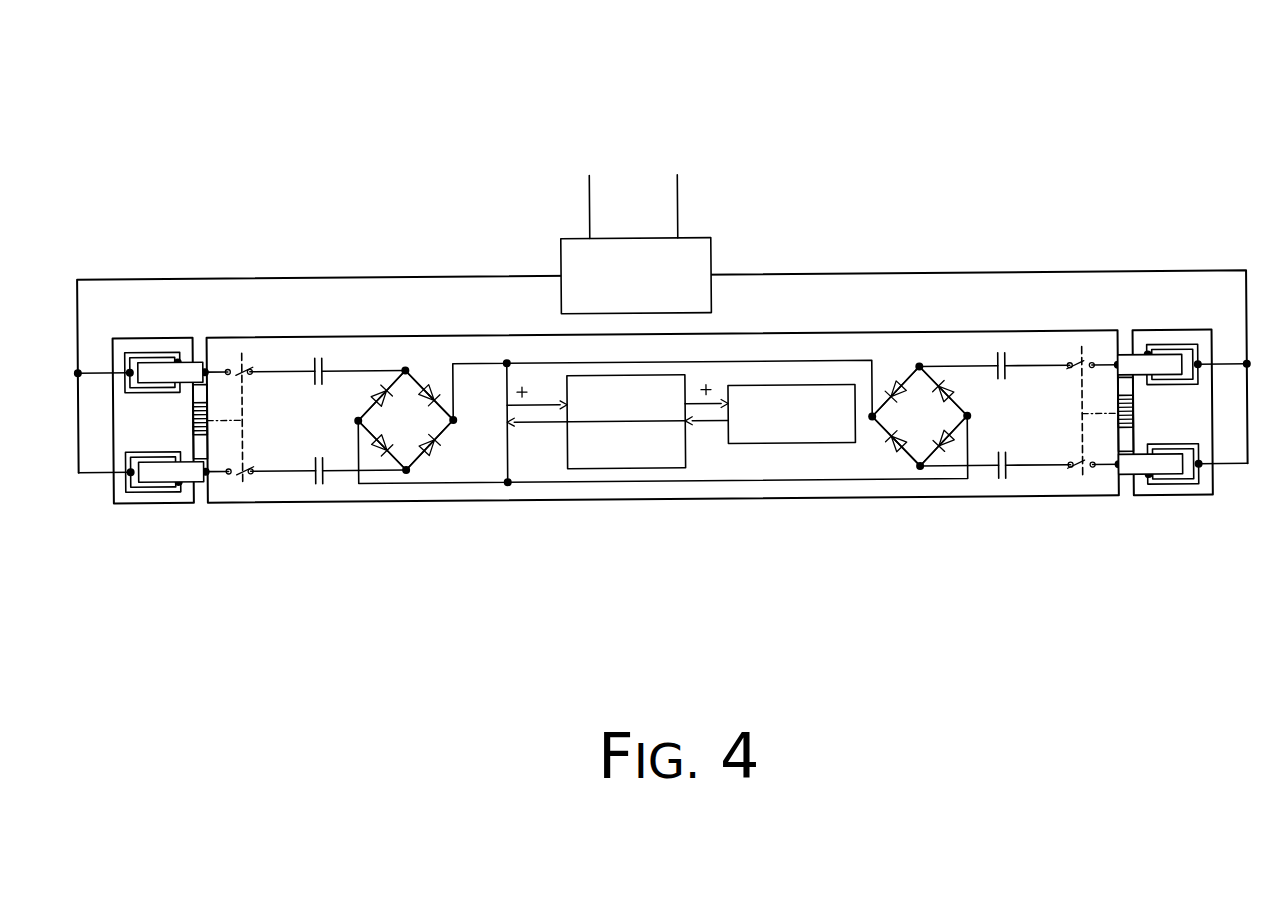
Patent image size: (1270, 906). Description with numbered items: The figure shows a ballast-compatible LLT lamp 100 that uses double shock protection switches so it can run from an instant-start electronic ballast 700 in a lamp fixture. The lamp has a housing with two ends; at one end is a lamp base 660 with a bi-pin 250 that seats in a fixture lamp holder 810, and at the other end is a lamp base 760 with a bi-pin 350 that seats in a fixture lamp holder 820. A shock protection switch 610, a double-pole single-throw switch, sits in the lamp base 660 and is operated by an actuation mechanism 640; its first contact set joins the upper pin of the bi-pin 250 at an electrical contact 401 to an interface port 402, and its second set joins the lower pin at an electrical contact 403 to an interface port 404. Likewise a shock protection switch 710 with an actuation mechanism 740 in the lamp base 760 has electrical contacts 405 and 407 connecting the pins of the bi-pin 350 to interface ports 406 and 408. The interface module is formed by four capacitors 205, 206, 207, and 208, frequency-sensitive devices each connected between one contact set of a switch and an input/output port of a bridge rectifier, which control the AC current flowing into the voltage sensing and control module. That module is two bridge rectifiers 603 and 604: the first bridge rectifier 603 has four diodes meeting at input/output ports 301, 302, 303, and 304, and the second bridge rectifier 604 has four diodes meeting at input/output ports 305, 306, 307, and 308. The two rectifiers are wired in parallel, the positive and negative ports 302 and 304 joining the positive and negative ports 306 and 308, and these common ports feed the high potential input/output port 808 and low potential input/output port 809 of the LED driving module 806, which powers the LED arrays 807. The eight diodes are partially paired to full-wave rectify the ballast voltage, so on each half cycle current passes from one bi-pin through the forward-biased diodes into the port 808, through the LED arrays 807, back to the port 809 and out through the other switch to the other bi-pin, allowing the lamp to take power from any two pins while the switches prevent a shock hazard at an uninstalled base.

The ballast-compatible LLT lamp 100 is at (767, 305).
The electronic ballast 700 is at (712, 238).
The lamp base 660 is at (236, 310).
The lamp base 760 is at (1103, 308).
The shock protection switch 610 is at (252, 368).
The shock protection switch 710 is at (1078, 352).
The capacitor 205 is at (322, 358).
The capacitor 206 is at (322, 485).
The capacitor 207 is at (1000, 356).
The capacitor 208 is at (1005, 483).
The electrical contact 401 is at (203, 366).
The interface port 402 is at (278, 367).
The electrical contact 403 is at (208, 472).
The interface port 404 is at (284, 474).
The electrical contact 405 is at (1118, 364).
The interface port 406 is at (1030, 466).
The electrical contact 407 is at (1117, 466).
The interface port 408 is at (1020, 365).
The first bridge rectifier 603 is at (440, 352).
The second bridge rectifier 604 is at (883, 351).
The input/output port 301 is at (407, 366).
The input/output port 302 is at (457, 443).
The input/output port 303 is at (408, 472).
The input/output port 304 is at (362, 368).
The input/output port 305 is at (918, 366).
The input/output port 306 is at (873, 420).
The input/output port 307 is at (921, 470).
The input/output port 308 is at (962, 400).
The input/output port 808 is at (507, 362).
The input/output port 809 is at (508, 483).
The LED driving module 806 is at (642, 470).
The LED arrays 807 is at (768, 445).
The fixture lamp holder 810 is at (186, 527).
The fixture lamp holder 820 is at (1154, 517).
The bi-pin 250 is at (152, 378).
The actuation mechanism 640 is at (190, 447).
The bi-pin 350 is at (1165, 360).
The actuation mechanism 740 is at (1157, 460).